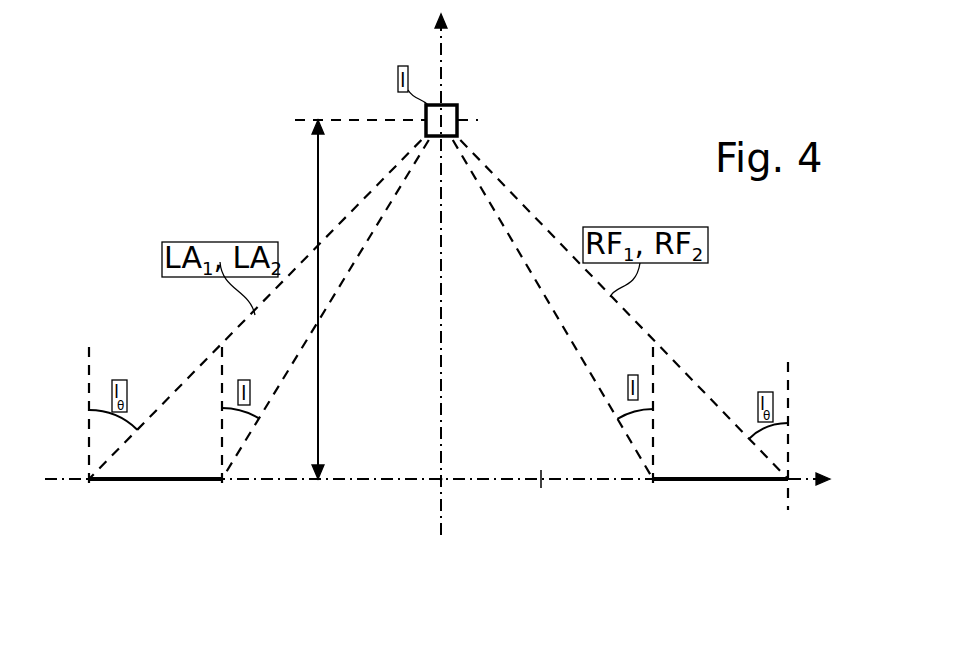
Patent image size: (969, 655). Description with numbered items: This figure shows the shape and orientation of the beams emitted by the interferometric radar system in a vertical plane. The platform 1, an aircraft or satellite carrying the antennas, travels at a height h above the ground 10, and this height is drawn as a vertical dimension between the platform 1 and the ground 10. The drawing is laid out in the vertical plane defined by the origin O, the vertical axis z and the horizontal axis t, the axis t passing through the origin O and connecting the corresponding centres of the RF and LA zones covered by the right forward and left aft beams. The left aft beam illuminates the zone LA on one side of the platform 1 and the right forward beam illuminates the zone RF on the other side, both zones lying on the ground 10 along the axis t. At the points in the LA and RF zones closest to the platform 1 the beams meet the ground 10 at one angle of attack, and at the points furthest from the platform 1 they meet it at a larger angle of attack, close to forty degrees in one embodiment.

The platform 1 is at (457, 105).
The ground 10 is at (541, 488).
The left aft zone LA is at (155, 481).
The right forward zone RF is at (738, 481).
The origin O is at (441, 479).
The height h is at (309, 299).
The z axis z is at (434, 271).
The t axis t is at (437, 469).